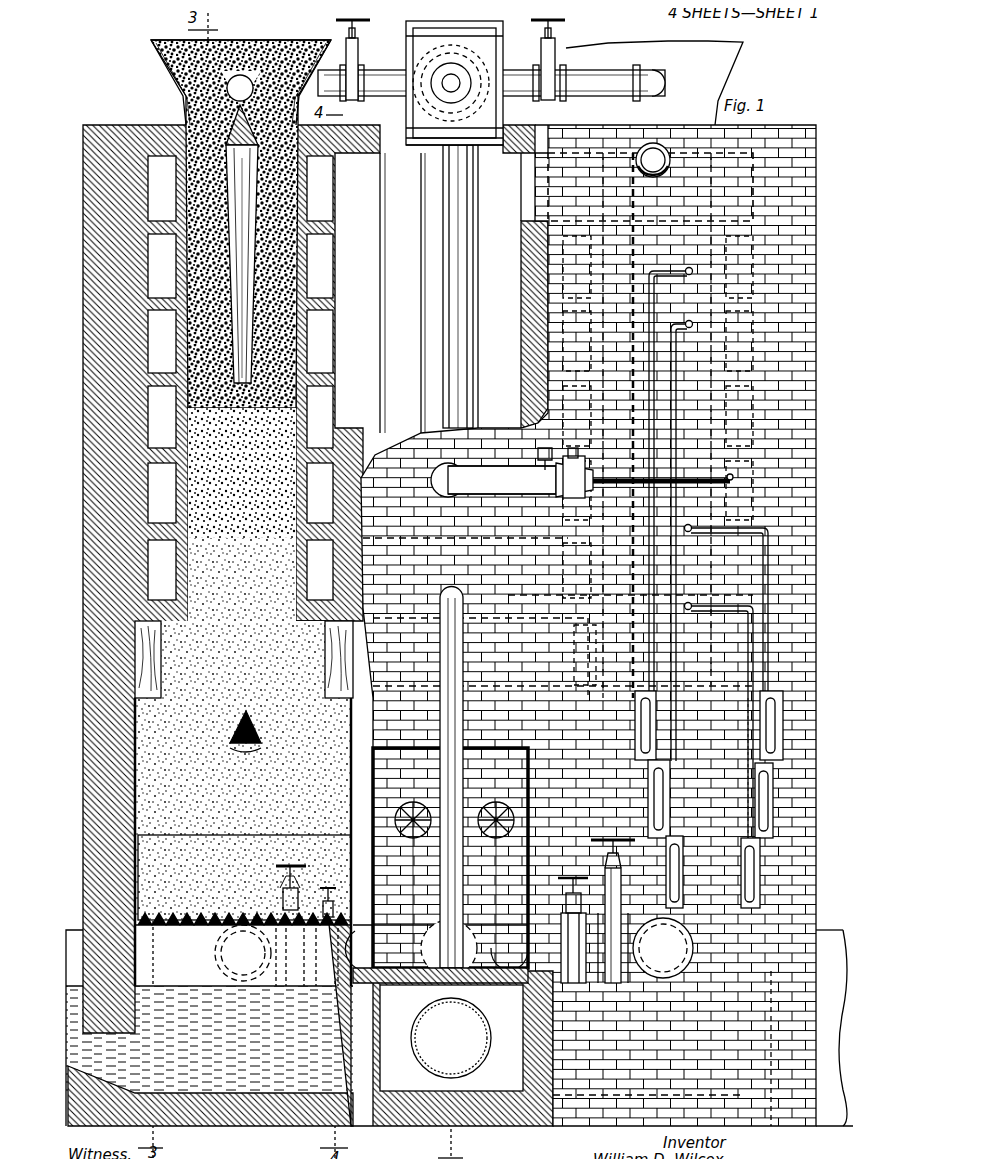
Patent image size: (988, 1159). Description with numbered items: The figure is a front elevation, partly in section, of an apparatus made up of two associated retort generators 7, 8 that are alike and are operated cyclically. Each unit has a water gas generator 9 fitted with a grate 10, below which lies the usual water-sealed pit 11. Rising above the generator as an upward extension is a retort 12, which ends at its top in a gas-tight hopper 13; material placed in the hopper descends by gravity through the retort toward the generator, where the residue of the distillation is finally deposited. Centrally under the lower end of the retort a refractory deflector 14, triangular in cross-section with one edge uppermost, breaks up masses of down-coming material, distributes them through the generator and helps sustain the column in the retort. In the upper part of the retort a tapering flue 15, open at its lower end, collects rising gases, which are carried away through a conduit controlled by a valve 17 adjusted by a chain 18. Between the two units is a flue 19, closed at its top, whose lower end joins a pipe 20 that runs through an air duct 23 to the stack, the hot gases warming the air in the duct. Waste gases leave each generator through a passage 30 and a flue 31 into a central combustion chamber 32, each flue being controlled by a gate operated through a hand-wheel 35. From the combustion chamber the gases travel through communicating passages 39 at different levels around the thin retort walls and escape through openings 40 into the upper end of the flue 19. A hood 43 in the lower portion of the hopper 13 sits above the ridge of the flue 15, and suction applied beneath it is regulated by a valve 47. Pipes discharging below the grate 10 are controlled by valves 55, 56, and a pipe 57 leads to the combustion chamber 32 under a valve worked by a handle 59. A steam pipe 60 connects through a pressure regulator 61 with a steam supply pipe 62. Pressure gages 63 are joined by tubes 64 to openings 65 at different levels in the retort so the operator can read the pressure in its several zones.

The retort generator 7 is at (170, 100).
The retort generator 8 is at (587, 85).
The water gas generator 9 is at (430, 712).
The grate 10 is at (185, 920).
The water-sealed pit 11 is at (255, 1075).
The retort 12 is at (365, 408).
The gas-tight hopper 13 is at (172, 62).
The deflector 14 is at (225, 718).
The flue 15 is at (235, 265).
The valve 17 is at (650, 150).
The chain 18 is at (468, 322).
The flue 19 is at (409, 293).
The pipe 20 is at (478, 1020).
The air duct 23 is at (440, 1029).
The passage 30 is at (140, 637).
The flue 31 is at (349, 659).
The central combustion chamber 32 is at (745, 548).
The hand-wheel 35 is at (436, 862).
The passages 39 is at (313, 355).
The openings 40 is at (360, 195).
The hood 43 is at (255, 33).
The valve 47 is at (350, 60).
The valve 55 is at (557, 930).
The valve 56 is at (615, 895).
The pipe 57 is at (373, 717).
The handle 59 is at (447, 778).
The steam pipe 60 is at (440, 283).
The pressure regulator 61 is at (545, 455).
The steam supply pipe 62 is at (687, 470).
The pressure gages 63 is at (650, 800).
The tubes 64 is at (645, 507).
The openings 65 is at (172, 255).